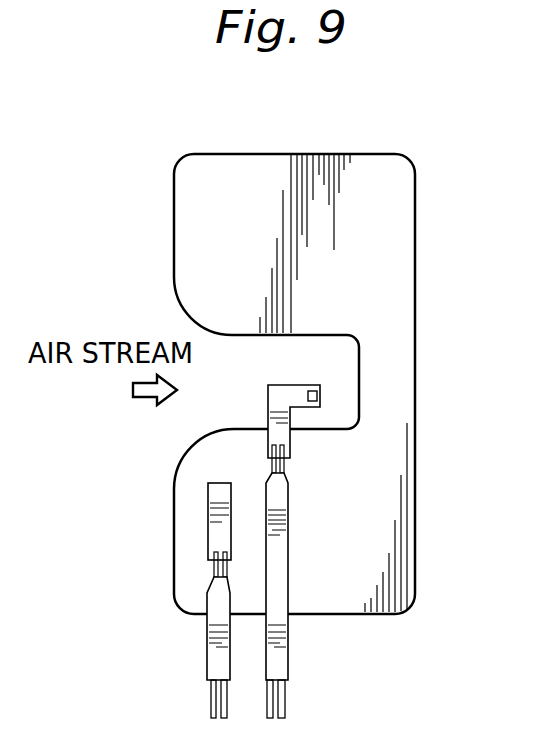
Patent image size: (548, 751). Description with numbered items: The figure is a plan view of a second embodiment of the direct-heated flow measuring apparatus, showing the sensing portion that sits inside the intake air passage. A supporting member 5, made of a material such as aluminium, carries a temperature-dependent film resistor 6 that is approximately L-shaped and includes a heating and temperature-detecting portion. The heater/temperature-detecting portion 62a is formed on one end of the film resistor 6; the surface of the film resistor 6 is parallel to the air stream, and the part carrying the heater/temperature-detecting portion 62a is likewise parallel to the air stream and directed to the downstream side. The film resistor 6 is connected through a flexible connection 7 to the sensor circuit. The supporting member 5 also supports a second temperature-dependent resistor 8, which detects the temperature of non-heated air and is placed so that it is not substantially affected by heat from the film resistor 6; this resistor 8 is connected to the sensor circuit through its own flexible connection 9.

The supporting member 5 is at (408, 263).
The film resistor 6 is at (288, 408).
The heater/temperature-detecting portion 62a is at (312, 391).
The flexible connection 7 is at (287, 568).
The temperature-dependent resistor 8 is at (223, 528).
The flexible connection 9 is at (230, 632).